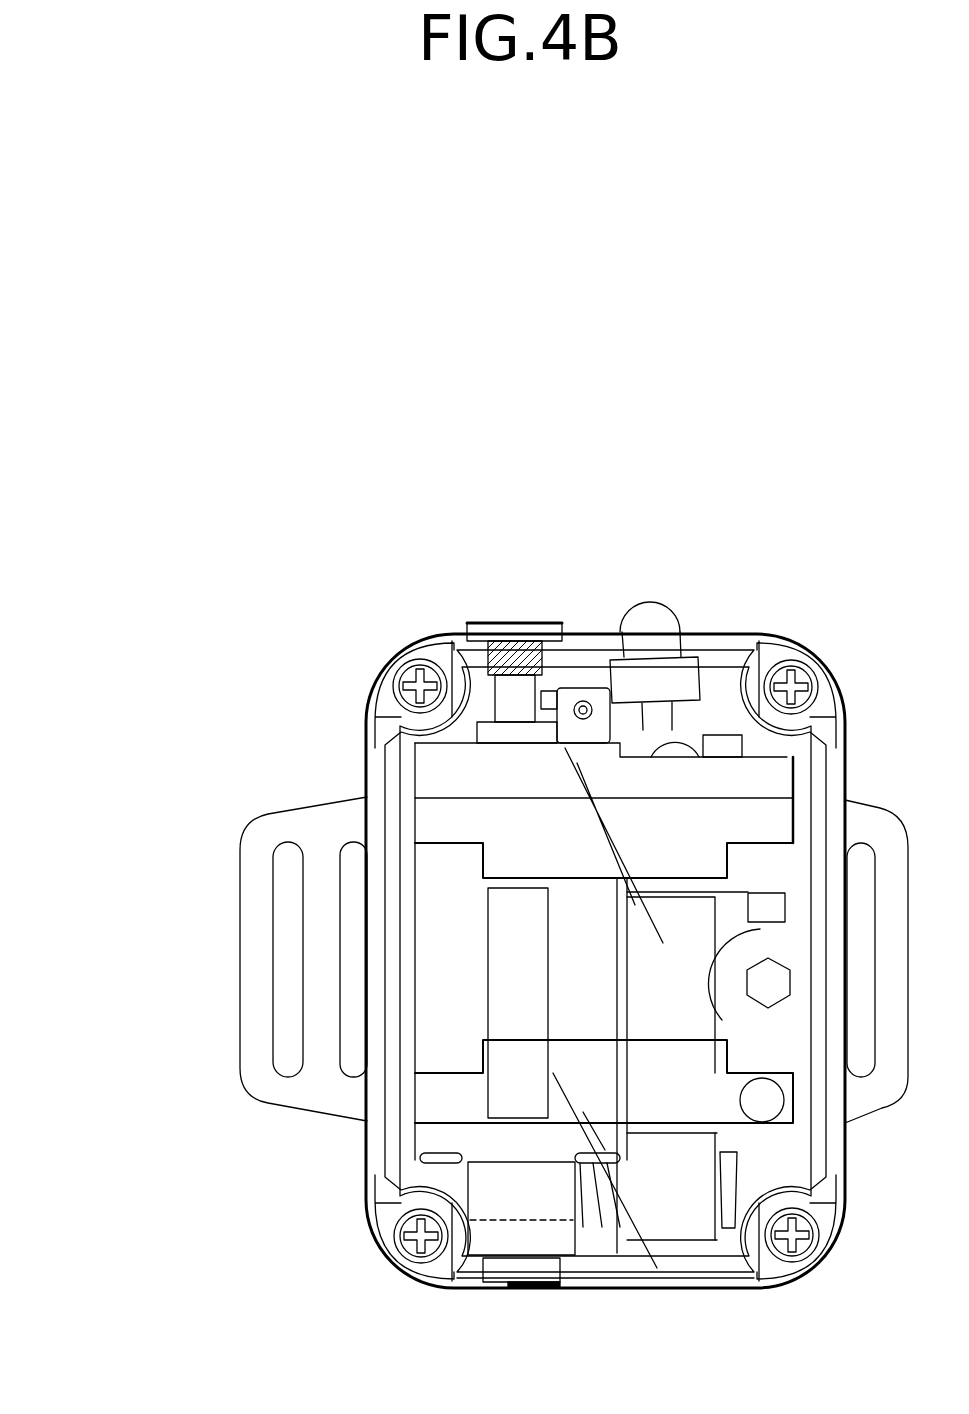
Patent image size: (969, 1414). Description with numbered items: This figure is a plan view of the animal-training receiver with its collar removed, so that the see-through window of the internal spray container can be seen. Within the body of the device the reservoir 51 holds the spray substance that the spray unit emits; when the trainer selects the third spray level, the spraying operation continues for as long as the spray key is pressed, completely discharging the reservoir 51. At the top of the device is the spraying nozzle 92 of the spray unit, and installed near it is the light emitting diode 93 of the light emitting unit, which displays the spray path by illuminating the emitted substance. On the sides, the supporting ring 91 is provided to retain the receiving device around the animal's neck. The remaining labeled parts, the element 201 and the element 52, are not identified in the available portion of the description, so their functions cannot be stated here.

The housing 201 is at (378, 750).
The supporting ring 91 is at (258, 860).
The reservoir 51 is at (453, 948).
The battery 52 is at (505, 997).
The light emitting diode 93 is at (515, 620).
The spraying nozzle 92 is at (648, 622).